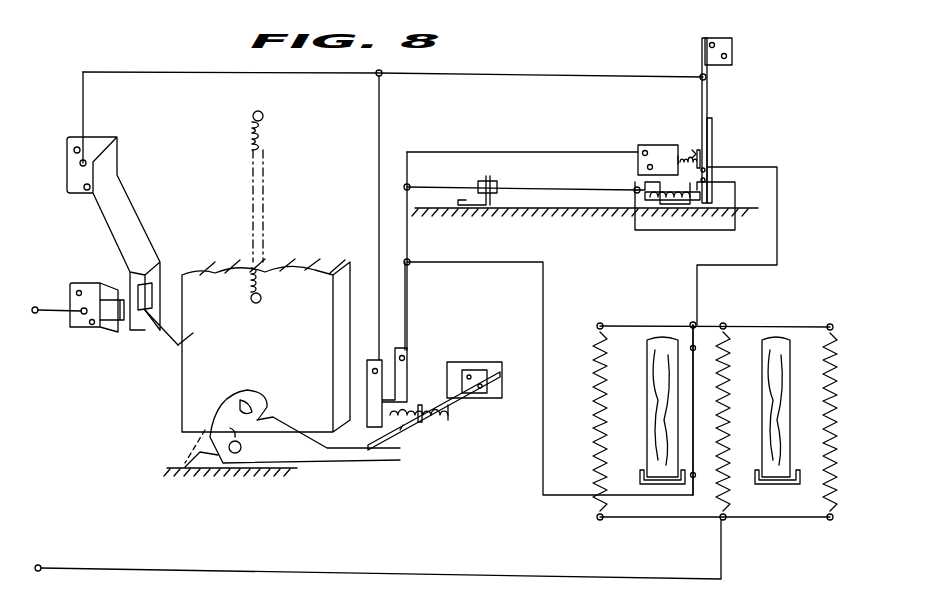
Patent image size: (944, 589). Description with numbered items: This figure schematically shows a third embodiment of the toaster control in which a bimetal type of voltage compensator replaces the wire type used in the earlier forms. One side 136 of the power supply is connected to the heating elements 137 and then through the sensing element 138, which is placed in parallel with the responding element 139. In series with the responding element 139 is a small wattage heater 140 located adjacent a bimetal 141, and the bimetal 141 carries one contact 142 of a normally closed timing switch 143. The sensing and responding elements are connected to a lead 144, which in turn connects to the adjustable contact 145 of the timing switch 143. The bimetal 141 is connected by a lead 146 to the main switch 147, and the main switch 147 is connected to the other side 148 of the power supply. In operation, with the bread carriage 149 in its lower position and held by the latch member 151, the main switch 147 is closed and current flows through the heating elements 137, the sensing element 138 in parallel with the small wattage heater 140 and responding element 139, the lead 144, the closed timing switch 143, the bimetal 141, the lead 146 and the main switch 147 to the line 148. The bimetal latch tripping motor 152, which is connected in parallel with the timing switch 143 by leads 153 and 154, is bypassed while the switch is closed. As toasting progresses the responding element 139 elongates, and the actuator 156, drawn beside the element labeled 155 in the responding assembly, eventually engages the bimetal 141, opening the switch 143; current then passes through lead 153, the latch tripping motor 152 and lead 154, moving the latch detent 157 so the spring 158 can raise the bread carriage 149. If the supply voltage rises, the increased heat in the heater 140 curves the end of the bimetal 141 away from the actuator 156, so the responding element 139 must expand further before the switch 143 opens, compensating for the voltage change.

The side of the power supply 136 is at (65, 568).
The heating elements 137 is at (598, 455).
The sensing element 138 is at (697, 367).
The responding element 139 is at (555, 187).
The small wattage heater 140 is at (712, 185).
The bimetal 141 is at (712, 160).
The contact 142 is at (713, 175).
The normally closed timing switch 143 is at (693, 148).
The lead 144 is at (495, 152).
The adjustable contact 145 is at (690, 150).
The lead 146 is at (605, 77).
The main switch 147 is at (118, 332).
The other side of the power supply 148 is at (36, 305).
The bread carriage 149 is at (278, 346).
The latch member 151 is at (305, 450).
The bimetal latch tripping motor 152 is at (405, 360).
The lead 153 is at (405, 315).
The lead 154 is at (383, 125).
The solenoid 155 is at (665, 205).
The actuator 156 is at (695, 205).
The latch detent 157 is at (400, 430).
The spring 158 is at (265, 195).